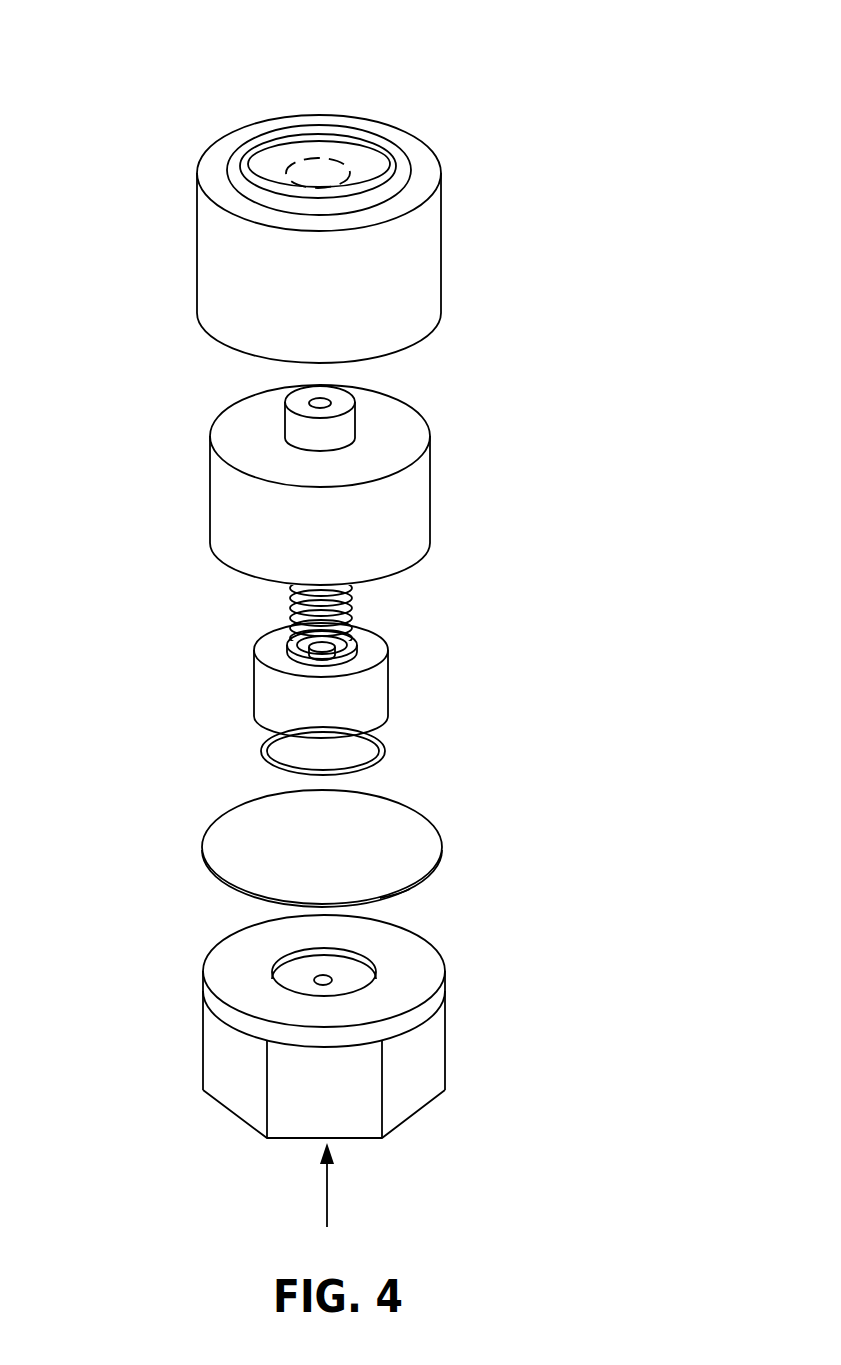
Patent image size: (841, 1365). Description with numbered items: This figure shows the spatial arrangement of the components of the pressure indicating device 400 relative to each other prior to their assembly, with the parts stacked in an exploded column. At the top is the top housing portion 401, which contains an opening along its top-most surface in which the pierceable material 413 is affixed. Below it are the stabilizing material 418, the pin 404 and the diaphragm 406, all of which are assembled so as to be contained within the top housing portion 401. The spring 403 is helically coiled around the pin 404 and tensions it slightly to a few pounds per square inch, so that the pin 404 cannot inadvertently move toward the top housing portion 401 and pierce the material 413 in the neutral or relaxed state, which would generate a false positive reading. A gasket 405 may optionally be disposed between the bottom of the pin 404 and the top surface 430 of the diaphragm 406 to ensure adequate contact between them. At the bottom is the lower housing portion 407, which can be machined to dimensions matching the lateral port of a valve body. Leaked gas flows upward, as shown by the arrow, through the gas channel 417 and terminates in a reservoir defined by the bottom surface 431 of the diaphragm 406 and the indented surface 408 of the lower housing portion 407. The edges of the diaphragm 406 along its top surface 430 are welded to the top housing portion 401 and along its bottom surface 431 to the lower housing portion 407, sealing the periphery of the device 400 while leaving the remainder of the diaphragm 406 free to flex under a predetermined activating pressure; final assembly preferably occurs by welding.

The device 400 is at (410, 74).
The top housing portion 401 is at (198, 245).
The material 413 is at (296, 164).
The stabilizing material 418 is at (210, 487).
The spring 403 is at (292, 606).
The pin 404 is at (254, 677).
The gasket 405 is at (262, 748).
The diaphragm 406 is at (202, 850).
The top surface 430 is at (424, 848).
The bottom surface 431 is at (408, 890).
The lower housing portion 407 is at (203, 1037).
The indented surface 408 is at (355, 977).
The gas channel 417 is at (328, 985).